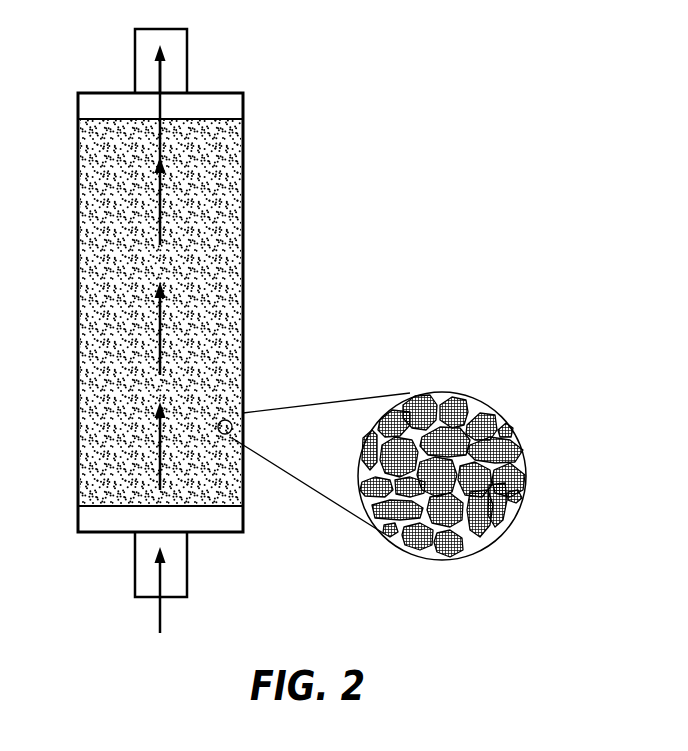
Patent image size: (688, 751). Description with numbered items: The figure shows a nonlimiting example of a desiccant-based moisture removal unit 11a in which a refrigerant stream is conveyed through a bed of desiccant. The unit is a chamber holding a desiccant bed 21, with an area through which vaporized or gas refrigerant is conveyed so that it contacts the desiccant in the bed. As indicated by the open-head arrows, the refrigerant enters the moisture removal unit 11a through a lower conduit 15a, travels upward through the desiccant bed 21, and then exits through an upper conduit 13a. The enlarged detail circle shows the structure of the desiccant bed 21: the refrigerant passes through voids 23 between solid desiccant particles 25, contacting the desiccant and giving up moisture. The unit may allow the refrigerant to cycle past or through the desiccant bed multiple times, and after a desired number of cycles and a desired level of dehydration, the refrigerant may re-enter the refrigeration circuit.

The moisture removal unit 11a is at (78, 296).
The conduit 13a is at (135, 60).
The conduit 15a is at (135, 570).
The desiccant bed 21 is at (227, 208).
The voids 23 is at (445, 410).
The solid desiccant particles 25 is at (490, 425).